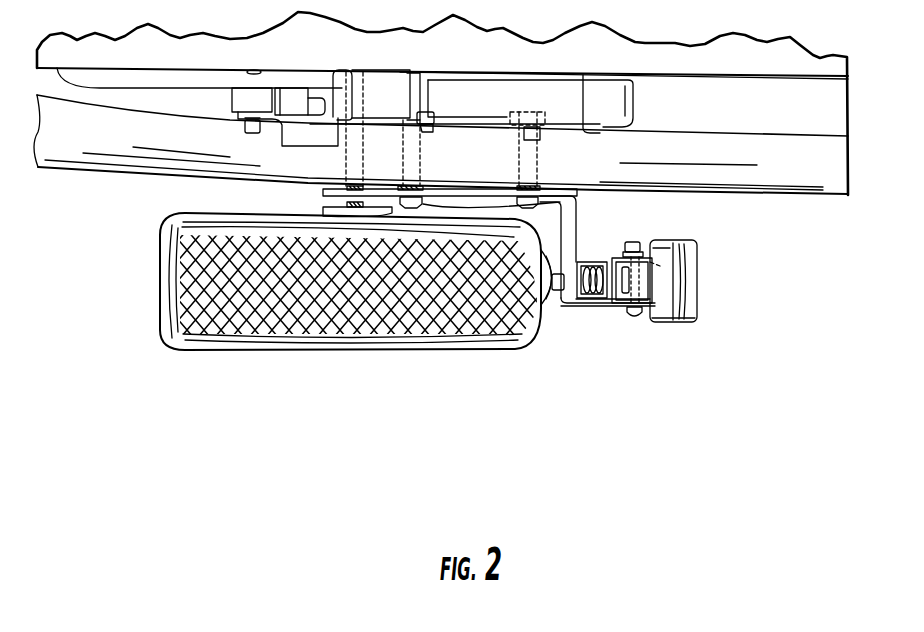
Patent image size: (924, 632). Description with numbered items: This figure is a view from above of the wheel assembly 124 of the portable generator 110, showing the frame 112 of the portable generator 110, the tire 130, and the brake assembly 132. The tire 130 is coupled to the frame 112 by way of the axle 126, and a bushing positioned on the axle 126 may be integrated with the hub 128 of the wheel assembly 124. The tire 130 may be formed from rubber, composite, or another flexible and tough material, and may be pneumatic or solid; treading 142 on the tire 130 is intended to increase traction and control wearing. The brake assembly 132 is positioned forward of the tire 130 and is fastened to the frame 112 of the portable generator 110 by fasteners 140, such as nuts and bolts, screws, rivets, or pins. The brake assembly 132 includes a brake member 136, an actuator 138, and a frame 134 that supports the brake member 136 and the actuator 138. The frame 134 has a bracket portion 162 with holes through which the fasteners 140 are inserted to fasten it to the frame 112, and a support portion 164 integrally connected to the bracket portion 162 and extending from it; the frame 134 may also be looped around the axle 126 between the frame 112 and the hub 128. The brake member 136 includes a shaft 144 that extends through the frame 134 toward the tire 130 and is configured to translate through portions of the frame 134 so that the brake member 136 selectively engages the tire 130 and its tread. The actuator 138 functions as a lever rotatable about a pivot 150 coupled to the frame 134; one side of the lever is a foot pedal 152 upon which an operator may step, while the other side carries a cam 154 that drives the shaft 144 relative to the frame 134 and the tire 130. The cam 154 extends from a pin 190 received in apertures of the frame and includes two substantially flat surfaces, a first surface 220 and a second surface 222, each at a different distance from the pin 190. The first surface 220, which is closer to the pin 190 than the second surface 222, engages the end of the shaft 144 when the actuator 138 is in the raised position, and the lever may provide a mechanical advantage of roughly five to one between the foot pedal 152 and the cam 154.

The portable generator 110 is at (68, 210).
The frame 112 is at (63, 136).
The wheel assembly 124 is at (118, 319).
The axle 126 is at (417, 152).
The hub 128 is at (342, 217).
The tire 130 is at (243, 336).
The brake assembly 132 is at (622, 328).
The frame 134 is at (608, 306).
The brake member 136 is at (547, 292).
The actuator 138 is at (706, 281).
The fasteners 140 is at (517, 157).
The treading 142 is at (205, 318).
The shaft 144 is at (590, 268).
The pivot 150 is at (636, 320).
The foot pedal 152 is at (663, 290).
The cam 154 is at (625, 287).
The bracket portion 162 is at (461, 197).
The support portion 164 is at (574, 243).
The pin 190 is at (650, 262).
The first surface 220 is at (657, 320).
The second surface 222 is at (621, 257).